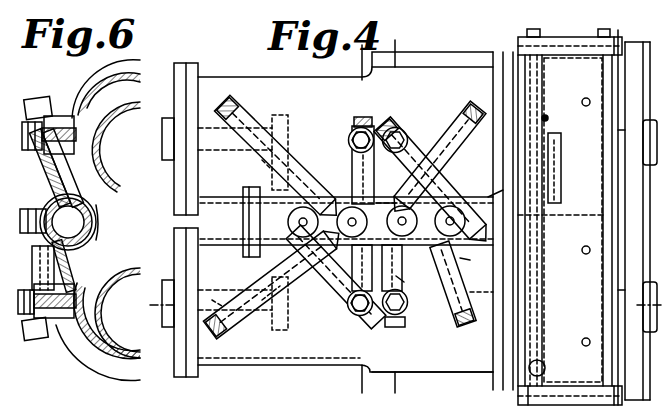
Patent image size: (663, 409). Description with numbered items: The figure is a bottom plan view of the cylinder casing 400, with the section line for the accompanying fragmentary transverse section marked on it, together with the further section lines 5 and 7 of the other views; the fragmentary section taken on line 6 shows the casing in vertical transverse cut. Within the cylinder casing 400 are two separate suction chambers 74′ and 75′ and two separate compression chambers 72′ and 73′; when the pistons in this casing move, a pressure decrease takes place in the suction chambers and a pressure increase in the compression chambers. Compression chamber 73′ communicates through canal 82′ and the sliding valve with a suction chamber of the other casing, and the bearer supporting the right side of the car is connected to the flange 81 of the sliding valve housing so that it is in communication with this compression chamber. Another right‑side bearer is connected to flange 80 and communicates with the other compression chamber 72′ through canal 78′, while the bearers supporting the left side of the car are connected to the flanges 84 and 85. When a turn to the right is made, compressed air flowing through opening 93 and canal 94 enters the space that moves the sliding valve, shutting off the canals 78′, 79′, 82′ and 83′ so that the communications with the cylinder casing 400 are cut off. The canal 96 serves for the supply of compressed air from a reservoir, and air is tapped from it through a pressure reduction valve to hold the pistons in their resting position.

In FIG. 4, the section line 5 is at (405, 283).
In FIG. 4, the section line 6 is at (353, 222).
In FIG. 4, the section line 7 is at (396, 220).
In FIG. 4, the compression chamber 72′ is at (493, 300).
In FIG. 6, the compression chamber 73′ is at (68, 318).
In FIG. 4, the compression chamber 73′ is at (352, 320).
In FIG. 4, the suction chamber 74′ is at (398, 317).
In FIG. 4, the suction chamber 75′ is at (274, 282).
In FIG. 4, the canal 78′ is at (452, 290).
In FIG. 4, the canal 79′ is at (398, 277).
In FIG. 4, the flange 80 is at (471, 266).
In FIG. 4, the flange 81 is at (275, 250).
In FIG. 4, the canal 82′ is at (350, 305).
In FIG. 4, the canal 83′ is at (263, 272).
In FIG. 4, the flange 84 is at (396, 248).
In FIG. 4, the flange 85 is at (336, 268).
In FIG. 4, the opening 93 is at (510, 196).
In FIG. 4, the canal 94 is at (488, 197).
In FIG. 4, the canal 96 is at (518, 44).
In FIG. 4, the cylinder casing 400 is at (420, 375).